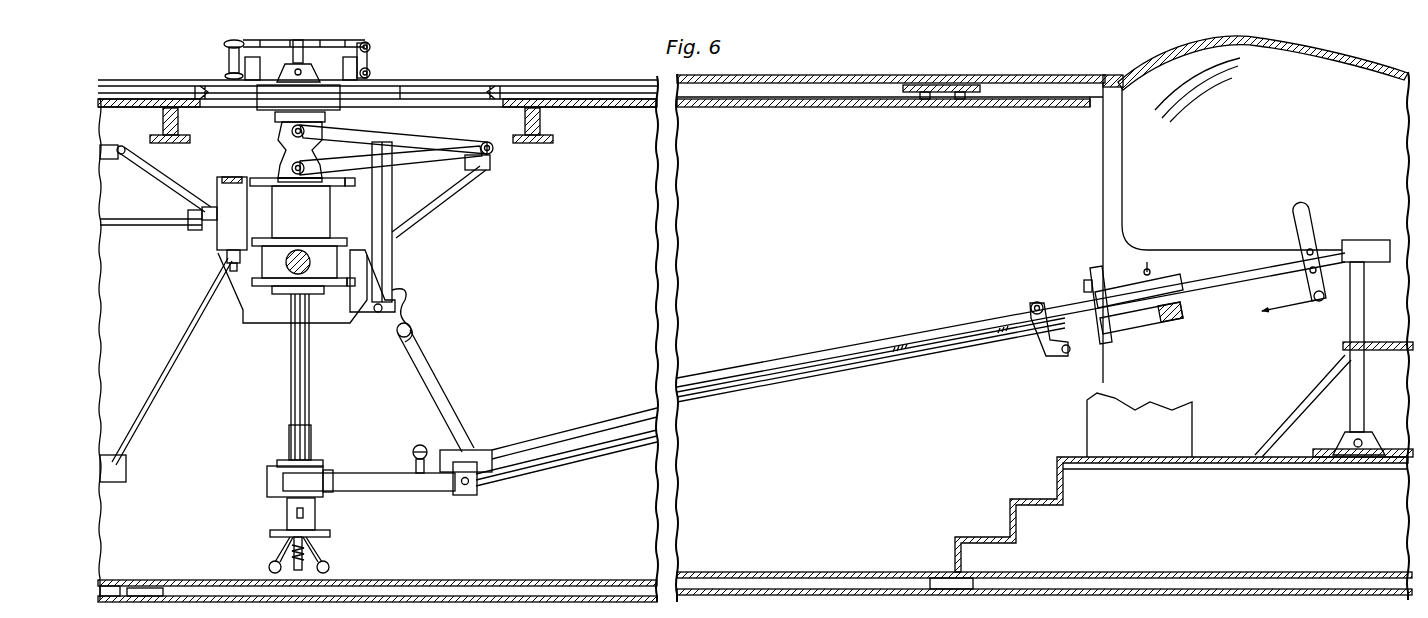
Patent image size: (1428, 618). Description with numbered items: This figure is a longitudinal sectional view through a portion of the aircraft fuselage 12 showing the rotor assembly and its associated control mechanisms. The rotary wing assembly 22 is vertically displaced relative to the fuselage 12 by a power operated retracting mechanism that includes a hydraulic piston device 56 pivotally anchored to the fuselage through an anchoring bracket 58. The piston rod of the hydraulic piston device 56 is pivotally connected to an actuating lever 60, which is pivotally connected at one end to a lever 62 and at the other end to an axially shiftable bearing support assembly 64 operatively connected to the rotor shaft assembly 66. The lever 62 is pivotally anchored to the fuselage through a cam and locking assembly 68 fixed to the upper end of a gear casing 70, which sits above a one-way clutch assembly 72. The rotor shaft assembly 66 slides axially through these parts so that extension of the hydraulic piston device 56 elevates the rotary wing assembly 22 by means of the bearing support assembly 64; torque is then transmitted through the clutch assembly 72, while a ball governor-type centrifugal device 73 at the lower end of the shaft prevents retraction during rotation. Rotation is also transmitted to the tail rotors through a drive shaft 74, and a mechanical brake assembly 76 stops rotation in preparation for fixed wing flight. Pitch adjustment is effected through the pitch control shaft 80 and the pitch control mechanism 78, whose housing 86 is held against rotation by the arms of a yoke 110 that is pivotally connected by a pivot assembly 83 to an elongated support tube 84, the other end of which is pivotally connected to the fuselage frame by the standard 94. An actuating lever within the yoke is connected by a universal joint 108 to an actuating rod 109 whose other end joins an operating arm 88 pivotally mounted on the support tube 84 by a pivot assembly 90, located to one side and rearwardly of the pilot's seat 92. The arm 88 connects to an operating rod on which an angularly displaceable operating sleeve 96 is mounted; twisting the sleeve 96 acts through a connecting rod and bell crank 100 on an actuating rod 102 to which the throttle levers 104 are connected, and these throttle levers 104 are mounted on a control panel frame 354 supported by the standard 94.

The fuselage 12 is at (882, 71).
The rotary wing assembly 22 is at (424, 71).
The hydraulic piston device 56 is at (398, 262).
The anchoring bracket 58 is at (370, 318).
The actuating lever 60 is at (402, 142).
The lever 62 is at (400, 160).
The axially shiftable bearing support assembly 64 is at (288, 131).
The rotor shaft assembly 66 is at (288, 397).
The cam and locking assembly 68 is at (279, 169).
The gear casing 70 is at (308, 226).
The one-way clutch assembly 72 is at (258, 265).
The ball governor-type centrifugal device 73 is at (346, 556).
The drive shaft 74 is at (142, 226).
The mechanical brake assembly 76 is at (228, 188).
The pitch control mechanism 78 is at (264, 481).
The pitch control shaft 80 is at (370, 59).
The pivot assembly 83 is at (466, 494).
The support tube 84 is at (598, 452).
The housing 86 is at (276, 498).
The operating arm 88 is at (1046, 302).
The pivot assembly 90 is at (1037, 388).
The pilot's seat 92 is at (1085, 428).
The standard 94 is at (1086, 346).
The operating sleeve 96 is at (1150, 330).
The bell crank 100 is at (1137, 268).
The actuating rod 102 is at (1213, 262).
The throttle levers 104 is at (1308, 230).
The universal joint 108 is at (412, 451).
The actuating rod 109 is at (762, 358).
The yoke 110 is at (368, 482).
The control panel frame 354 is at (1365, 241).